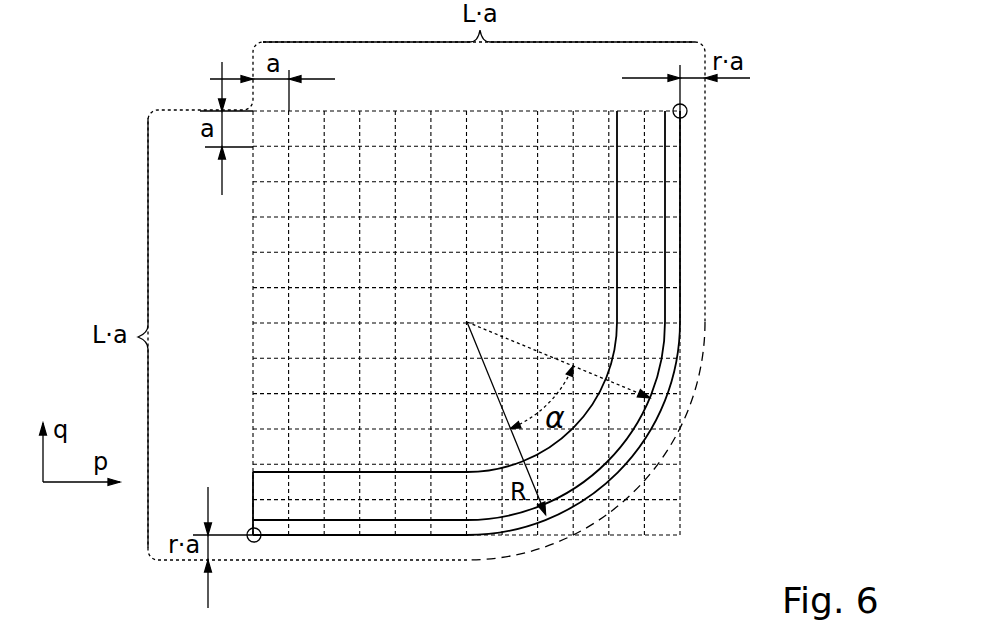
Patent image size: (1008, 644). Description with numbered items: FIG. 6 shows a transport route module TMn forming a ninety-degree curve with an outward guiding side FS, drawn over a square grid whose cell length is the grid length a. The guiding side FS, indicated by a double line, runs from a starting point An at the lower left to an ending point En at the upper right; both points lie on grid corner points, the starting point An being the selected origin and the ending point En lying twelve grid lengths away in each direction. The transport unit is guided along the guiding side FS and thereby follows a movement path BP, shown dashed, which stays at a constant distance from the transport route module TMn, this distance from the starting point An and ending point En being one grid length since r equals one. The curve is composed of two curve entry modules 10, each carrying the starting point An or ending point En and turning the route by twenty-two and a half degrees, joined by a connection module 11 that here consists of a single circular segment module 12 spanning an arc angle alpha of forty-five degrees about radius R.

The curve entry module 10 is at (640, 357).
The connection module 11 is at (645, 396).
The circular segment module 12 is at (583, 463).
The movement path BP is at (708, 143).
The guiding side FS is at (682, 298).
The transport route module TMn is at (643, 252).
The starting point An is at (250, 527).
The ending point En is at (672, 107).